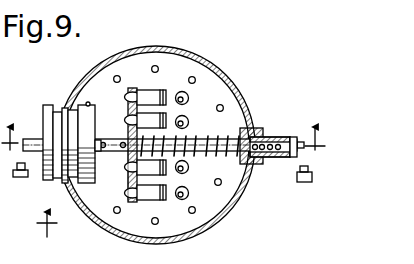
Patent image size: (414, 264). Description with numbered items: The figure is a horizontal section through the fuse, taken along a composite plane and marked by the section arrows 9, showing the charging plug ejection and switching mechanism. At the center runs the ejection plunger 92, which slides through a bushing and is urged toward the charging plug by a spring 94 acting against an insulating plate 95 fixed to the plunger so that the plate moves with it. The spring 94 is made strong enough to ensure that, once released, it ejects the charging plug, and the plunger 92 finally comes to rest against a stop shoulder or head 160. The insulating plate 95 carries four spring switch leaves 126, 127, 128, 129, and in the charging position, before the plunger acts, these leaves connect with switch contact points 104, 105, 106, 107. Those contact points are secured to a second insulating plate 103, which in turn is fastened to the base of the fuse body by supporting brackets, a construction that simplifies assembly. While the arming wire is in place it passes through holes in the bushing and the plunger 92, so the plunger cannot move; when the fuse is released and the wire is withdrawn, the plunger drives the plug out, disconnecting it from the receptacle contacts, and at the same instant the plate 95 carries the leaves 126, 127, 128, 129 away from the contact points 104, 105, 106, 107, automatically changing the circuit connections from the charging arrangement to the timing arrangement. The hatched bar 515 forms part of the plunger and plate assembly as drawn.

The section line 9 is at (49, 232).
The ejection plunger 92 is at (265, 140).
The spring 94 is at (229, 139).
The insulating plate 95 is at (128, 180).
The insulating plate 103 is at (216, 71).
The switch contact point 104 is at (188, 97).
The switch contact point 105 is at (189, 122).
The switch contact point 106 is at (189, 167).
The switch contact point 107 is at (189, 193).
The spring switch leaf 126 is at (150, 90).
The spring switch leaf 127 is at (164, 115).
The spring switch leaf 128 is at (150, 167).
The spring switch leaf 129 is at (152, 196).
The stop shoulder 160 is at (2, 233).
The rack bar 515 is at (129, 89).